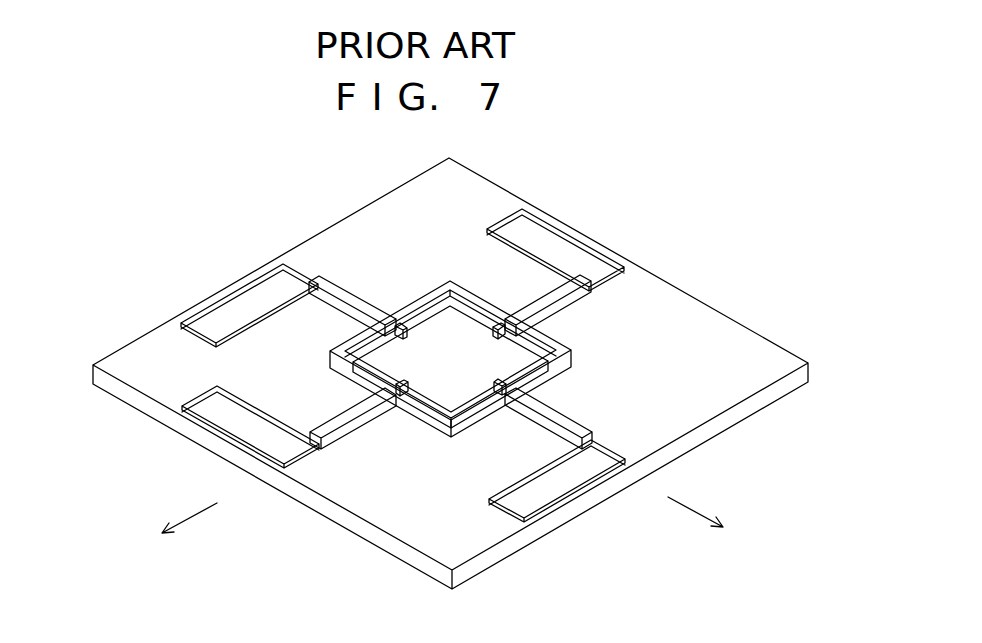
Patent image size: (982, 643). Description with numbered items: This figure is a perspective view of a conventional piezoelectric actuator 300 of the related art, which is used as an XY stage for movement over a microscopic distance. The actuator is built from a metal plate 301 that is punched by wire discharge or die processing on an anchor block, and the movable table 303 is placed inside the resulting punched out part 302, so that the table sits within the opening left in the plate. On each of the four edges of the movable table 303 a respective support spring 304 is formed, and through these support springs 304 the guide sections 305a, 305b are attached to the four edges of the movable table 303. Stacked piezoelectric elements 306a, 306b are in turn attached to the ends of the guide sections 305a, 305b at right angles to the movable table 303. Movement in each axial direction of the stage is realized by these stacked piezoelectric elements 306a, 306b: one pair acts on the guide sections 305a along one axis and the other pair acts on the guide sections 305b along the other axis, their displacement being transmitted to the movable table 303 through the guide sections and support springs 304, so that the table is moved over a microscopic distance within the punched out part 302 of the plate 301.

The piezoelectric actuator 300 is at (127, 230).
The substrate 301 is at (758, 355).
The punched out part 302 is at (586, 362).
The movable table 303 is at (459, 330).
The support springs 304 is at (433, 300).
The guide sections 305a is at (312, 283).
The guide sections 305b is at (603, 278).
The stacked piezoelectric elements 306a is at (257, 295).
The stacked piezoelectric elements 306b is at (530, 235).